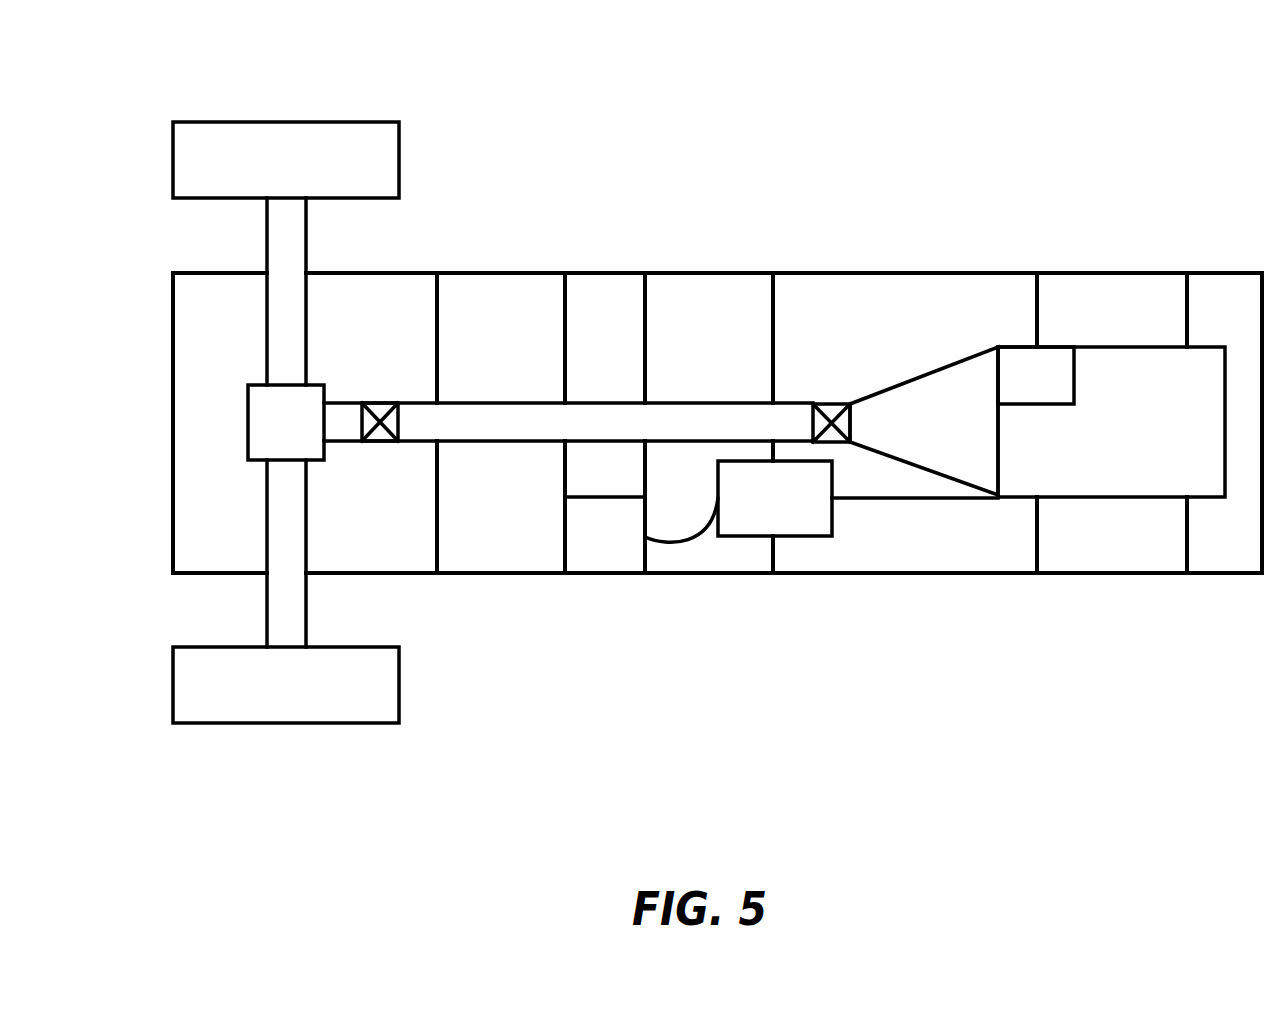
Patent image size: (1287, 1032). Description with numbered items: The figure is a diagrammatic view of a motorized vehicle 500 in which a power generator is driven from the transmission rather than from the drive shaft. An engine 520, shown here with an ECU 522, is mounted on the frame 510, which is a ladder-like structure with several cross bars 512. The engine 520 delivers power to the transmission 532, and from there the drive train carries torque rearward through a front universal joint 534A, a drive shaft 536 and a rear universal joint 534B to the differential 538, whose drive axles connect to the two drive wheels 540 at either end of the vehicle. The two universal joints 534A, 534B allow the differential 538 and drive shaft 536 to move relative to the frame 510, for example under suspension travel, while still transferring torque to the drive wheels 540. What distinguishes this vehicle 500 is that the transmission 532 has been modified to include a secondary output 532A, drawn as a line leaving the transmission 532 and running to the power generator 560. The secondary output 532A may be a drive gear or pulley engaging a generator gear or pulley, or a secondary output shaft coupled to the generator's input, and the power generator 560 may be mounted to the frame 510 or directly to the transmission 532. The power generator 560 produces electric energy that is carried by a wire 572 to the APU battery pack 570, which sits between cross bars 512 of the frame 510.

The motorized vehicle 500 is at (1082, 99).
The frame 510 is at (768, 272).
The cross bar 512 is at (645, 317).
The engine 520 is at (1111, 422).
The ECU 522 is at (1098, 310).
The transmission 532 is at (924, 421).
The secondary output 532A is at (888, 500).
The front universal joint 534A is at (652, 150).
The rear universal joint 534B is at (551, 150).
The drive shaft 536 is at (568, 422).
The differential 538 is at (267, 423).
The drive wheels 540 is at (286, 422).
The power generator 560 is at (775, 497).
The APU battery pack 570 is at (587, 553).
The wire 572 is at (685, 539).